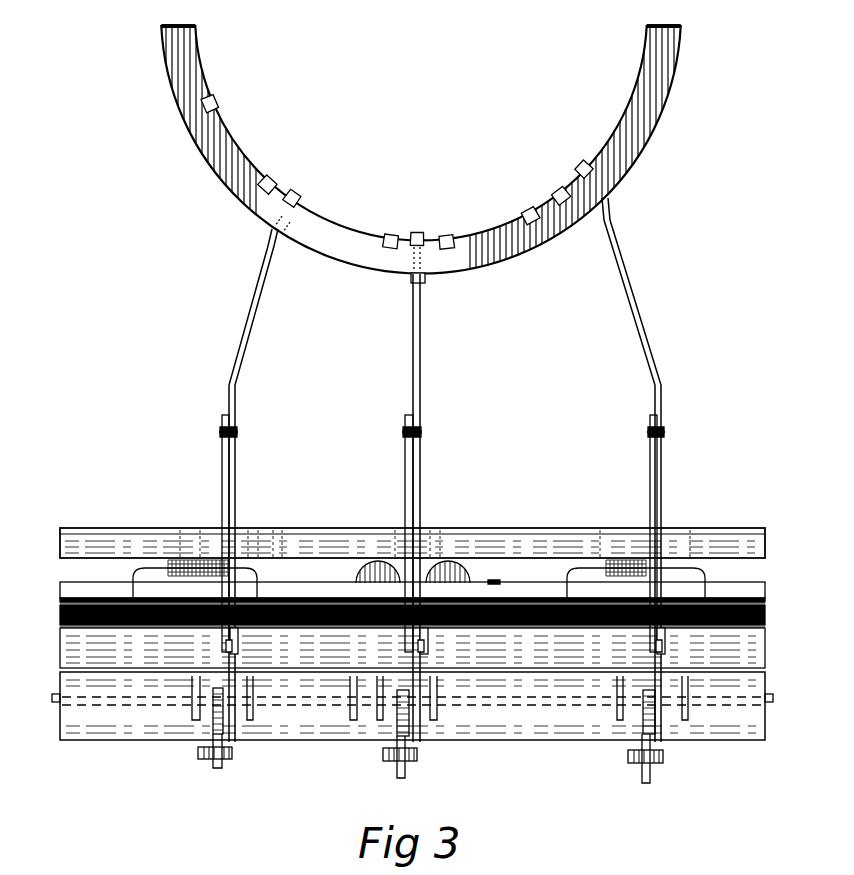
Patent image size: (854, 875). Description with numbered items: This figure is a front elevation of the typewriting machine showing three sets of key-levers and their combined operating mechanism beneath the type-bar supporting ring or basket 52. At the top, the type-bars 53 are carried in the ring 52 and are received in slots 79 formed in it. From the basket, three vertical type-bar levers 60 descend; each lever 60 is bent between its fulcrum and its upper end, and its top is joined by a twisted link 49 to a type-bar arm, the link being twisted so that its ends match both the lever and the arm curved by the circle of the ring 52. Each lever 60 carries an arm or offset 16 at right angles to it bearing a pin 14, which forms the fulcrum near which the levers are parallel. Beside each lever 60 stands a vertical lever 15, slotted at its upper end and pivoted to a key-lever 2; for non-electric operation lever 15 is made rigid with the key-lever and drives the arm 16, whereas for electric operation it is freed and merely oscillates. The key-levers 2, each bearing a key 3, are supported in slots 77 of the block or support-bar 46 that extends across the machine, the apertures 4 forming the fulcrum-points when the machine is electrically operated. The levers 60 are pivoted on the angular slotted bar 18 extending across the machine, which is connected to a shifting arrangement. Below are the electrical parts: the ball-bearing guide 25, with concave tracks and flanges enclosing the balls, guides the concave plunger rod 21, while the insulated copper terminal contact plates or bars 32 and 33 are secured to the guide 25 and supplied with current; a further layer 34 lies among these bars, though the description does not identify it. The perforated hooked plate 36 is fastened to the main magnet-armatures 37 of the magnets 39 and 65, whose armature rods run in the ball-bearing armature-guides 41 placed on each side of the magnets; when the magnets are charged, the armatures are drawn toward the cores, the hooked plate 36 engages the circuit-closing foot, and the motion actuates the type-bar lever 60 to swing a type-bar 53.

The key-lever 2 is at (213, 700).
The key 3 is at (208, 760).
The aperture for fulcrum-point 4 is at (52, 698).
The pin 14 is at (236, 430).
The vertical lever 15 is at (221, 469).
The arm or offset 16 is at (237, 436).
The angular slotted bar 18 is at (262, 530).
The rod 21 is at (228, 650).
The ball-bearing guide 25 is at (784, 644).
The terminal contact plate or bar 32 is at (62, 600).
The terminal contact plate or bar 33 is at (62, 614).
The layer 34 is at (62, 604).
The perforated hooked plate 36 is at (72, 588).
The main magnet-armatures 37 is at (257, 577).
The magnets 39 is at (168, 565).
The armature-guides 41 is at (496, 581).
The block or support-bar 46 is at (316, 713).
The twisted link 49 is at (426, 280).
The type-bar supporting ring or basket 52 is at (230, 162).
The type-bars 53 is at (298, 205).
The vertical type-bar lever 60 is at (272, 280).
The magnets 65 is at (356, 576).
The slots in key-lever support-bar 77 is at (618, 720).
The slots for type-bars 79 is at (268, 189).